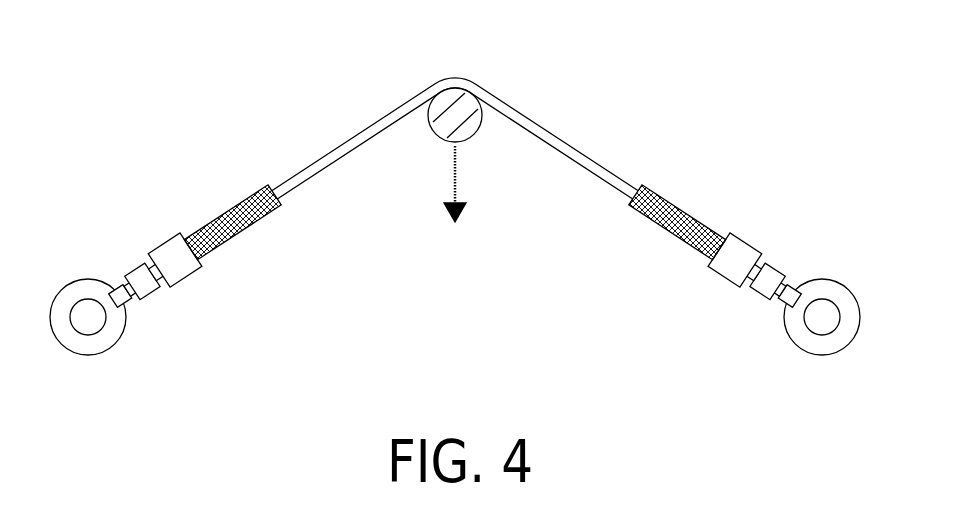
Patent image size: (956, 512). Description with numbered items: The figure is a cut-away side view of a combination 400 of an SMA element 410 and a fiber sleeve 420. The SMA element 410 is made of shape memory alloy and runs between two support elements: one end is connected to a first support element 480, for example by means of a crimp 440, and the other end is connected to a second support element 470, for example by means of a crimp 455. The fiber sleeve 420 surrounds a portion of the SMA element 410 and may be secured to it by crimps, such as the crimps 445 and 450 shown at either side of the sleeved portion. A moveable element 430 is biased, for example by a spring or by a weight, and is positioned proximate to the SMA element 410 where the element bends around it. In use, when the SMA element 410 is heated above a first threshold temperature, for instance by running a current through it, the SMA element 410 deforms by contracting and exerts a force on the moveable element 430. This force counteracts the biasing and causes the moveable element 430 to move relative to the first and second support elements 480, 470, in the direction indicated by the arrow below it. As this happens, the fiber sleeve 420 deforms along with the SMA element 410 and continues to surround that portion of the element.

The combination 400 is at (239, 118).
The SMA element 410 is at (355, 138).
The fiber sleeve 420 is at (238, 225).
The moveable element 430 is at (463, 107).
The crimp 440 is at (143, 285).
The crimp 445 is at (173, 258).
The crimp 450 is at (738, 255).
The crimp 455 is at (767, 287).
The second support element 470 is at (840, 292).
The first support element 480 is at (83, 287).